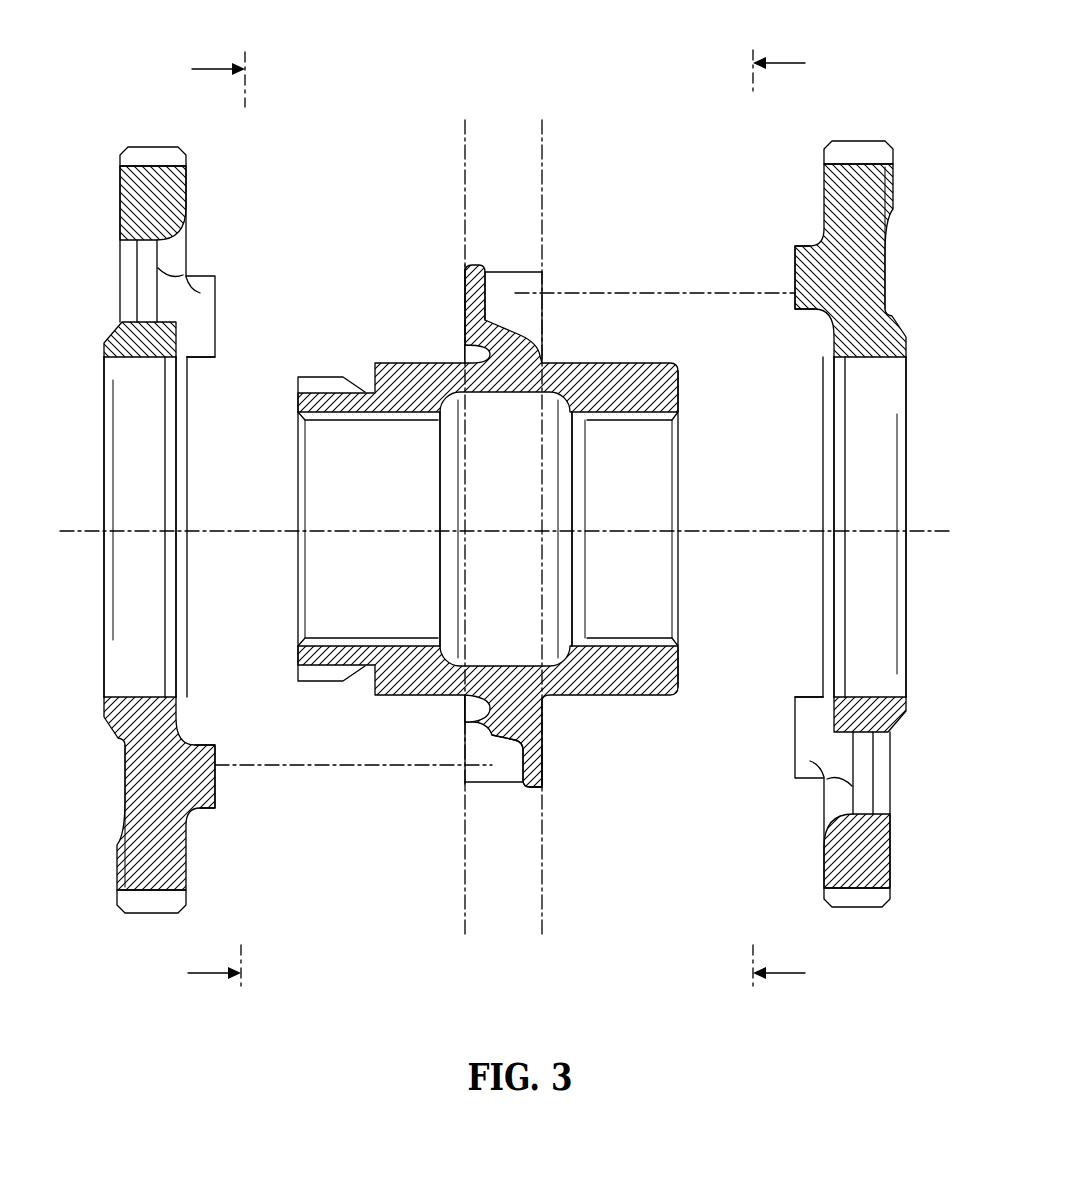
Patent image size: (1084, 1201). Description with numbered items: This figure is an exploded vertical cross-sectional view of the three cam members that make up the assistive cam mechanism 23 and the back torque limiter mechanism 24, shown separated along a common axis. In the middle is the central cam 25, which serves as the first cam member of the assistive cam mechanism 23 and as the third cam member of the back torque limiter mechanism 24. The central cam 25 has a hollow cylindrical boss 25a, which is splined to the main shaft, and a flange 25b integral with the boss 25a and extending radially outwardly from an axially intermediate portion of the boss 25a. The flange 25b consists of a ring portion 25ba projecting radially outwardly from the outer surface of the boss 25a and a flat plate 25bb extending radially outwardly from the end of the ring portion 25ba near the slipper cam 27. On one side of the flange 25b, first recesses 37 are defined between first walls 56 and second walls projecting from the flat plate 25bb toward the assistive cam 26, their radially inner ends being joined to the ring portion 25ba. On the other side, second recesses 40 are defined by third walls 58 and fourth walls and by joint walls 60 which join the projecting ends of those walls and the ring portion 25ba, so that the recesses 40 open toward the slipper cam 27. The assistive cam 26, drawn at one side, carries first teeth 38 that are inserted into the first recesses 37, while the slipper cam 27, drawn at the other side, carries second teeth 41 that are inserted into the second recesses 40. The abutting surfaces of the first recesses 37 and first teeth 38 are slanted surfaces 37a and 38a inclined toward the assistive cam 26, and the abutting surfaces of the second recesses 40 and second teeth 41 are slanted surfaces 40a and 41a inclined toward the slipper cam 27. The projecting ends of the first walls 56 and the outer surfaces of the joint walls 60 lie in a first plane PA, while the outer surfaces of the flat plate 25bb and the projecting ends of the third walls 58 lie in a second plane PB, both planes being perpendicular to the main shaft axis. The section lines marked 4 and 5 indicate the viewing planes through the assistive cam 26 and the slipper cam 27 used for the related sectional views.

The assistive cam mechanism 23 is at (216, 278).
The back torque limiter mechanism 24 is at (806, 249).
The central cam 25 is at (419, 362).
The hollow cylindrical boss 25a is at (619, 364).
The flange 25b is at (543, 789).
The ring portion 25ba is at (488, 712).
The flat plate 25bb is at (545, 748).
The assistive cam 26 is at (175, 867).
The slipper cam 27 is at (828, 862).
The first recesses 37 is at (507, 773).
The slanted surface 37a is at (463, 742).
The first teeth 38 is at (218, 319).
The slanted surface 38a is at (204, 350).
The second recesses 40 is at (487, 290).
The slanted surface 40a is at (528, 285).
The second teeth 41 is at (797, 271).
The slanted surface 41a is at (810, 725).
The first wall 56 is at (465, 784).
The third wall 58 is at (548, 290).
The joint wall 60 is at (465, 290).
The first plane PA is at (465, 903).
The second plane PB is at (543, 908).
The section line 4 is at (216, 521).
The section line 5 is at (779, 521).